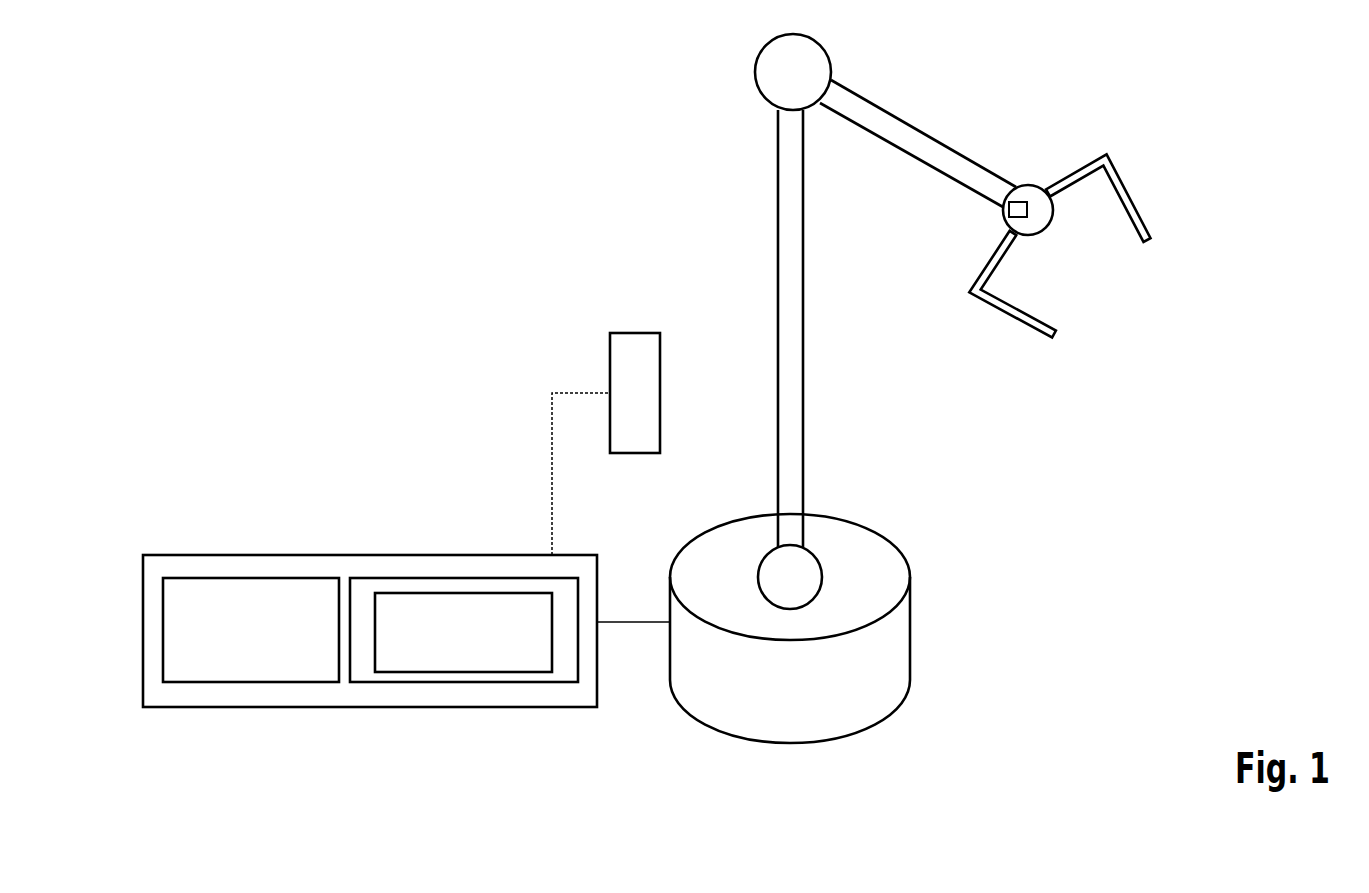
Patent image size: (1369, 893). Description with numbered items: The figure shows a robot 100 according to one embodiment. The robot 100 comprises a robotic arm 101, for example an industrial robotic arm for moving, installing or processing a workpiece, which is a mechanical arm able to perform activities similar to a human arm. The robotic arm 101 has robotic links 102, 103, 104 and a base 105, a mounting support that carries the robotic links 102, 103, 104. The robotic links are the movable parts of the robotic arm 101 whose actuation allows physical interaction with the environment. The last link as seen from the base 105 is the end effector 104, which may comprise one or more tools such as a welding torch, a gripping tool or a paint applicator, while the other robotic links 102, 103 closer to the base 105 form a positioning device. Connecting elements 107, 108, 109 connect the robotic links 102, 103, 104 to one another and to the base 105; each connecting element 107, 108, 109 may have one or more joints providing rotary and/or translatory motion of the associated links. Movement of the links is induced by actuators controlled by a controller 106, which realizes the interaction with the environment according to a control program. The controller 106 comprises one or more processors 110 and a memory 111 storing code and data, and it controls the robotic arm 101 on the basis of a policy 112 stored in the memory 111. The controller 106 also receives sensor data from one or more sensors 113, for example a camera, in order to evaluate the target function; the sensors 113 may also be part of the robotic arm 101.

The robot 100 is at (1058, 77).
The robotic arm 101 is at (735, 168).
The robotic link 102 is at (790, 288).
The robotic link 103 is at (955, 160).
The end effector 104 is at (1123, 198).
The base 105 is at (892, 643).
The controller 106 is at (367, 555).
The connecting element 107 is at (805, 565).
The connecting element 108 is at (765, 72).
The connecting element 109 is at (1040, 218).
The processor 110 is at (272, 645).
The memory 111 is at (462, 684).
The policy 112 is at (485, 648).
The sensor 113 is at (632, 333).